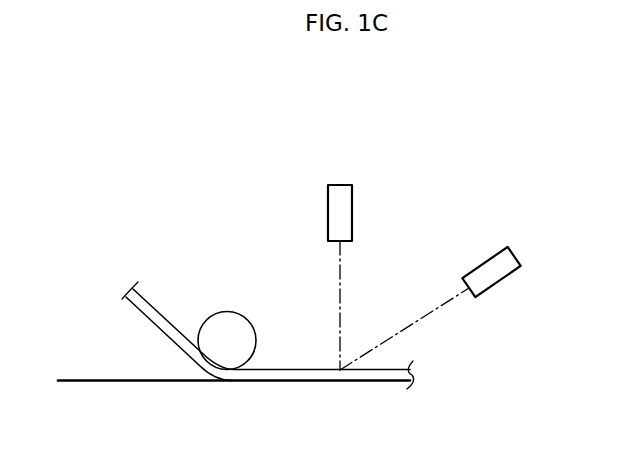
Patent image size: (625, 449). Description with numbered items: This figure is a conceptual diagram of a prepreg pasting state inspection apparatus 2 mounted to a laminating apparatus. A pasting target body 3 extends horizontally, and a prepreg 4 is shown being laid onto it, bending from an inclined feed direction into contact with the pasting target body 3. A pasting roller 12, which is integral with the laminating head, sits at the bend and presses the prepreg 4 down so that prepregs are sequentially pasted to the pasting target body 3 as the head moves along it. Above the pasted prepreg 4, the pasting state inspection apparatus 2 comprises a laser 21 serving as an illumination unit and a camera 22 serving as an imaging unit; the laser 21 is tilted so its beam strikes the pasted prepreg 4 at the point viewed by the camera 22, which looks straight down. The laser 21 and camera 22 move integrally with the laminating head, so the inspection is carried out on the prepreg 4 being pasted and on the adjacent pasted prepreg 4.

The pasting state inspection apparatus 2 is at (428, 178).
The pasting target body 3 is at (123, 382).
The prepreg 4 is at (156, 316).
The pasting roller 12 is at (226, 331).
The laser 21 is at (488, 268).
The camera 22 is at (345, 213).